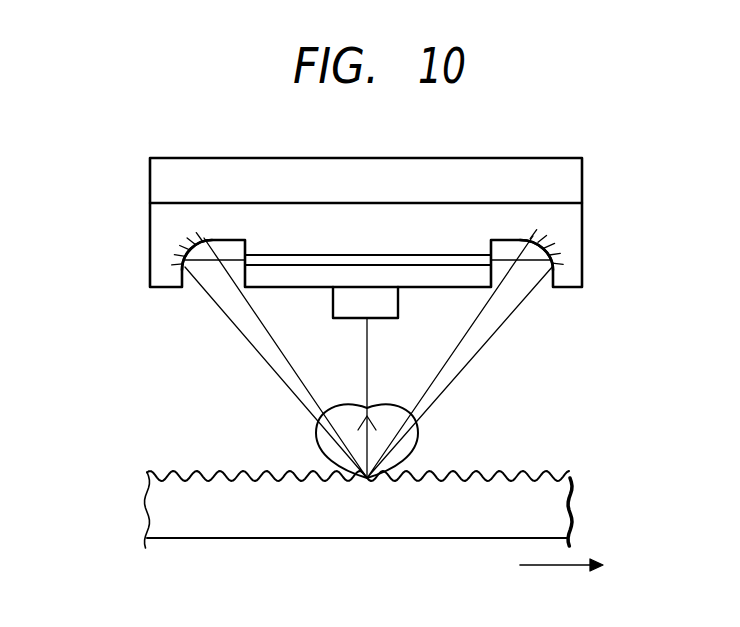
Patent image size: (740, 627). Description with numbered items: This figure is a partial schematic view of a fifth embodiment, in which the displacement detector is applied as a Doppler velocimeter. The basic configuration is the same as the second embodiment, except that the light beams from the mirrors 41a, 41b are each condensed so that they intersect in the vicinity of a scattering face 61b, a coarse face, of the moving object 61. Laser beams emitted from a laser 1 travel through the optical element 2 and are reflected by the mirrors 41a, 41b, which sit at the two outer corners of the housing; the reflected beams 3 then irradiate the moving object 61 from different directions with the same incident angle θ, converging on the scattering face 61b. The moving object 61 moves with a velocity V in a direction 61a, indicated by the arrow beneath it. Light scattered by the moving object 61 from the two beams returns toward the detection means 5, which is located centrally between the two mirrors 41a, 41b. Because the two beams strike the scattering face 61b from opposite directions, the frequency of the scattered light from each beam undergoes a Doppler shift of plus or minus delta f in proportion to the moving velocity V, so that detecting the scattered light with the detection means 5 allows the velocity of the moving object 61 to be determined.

The laser 1 is at (577, 180).
The lens 2 is at (400, 255).
The light beams 3 is at (252, 277).
The detection means 5 is at (382, 308).
The mirror 41a is at (556, 260).
The mirror 41b is at (180, 263).
The moving object 61 is at (558, 512).
The direction 61a is at (558, 568).
The scattering face 61b is at (548, 477).